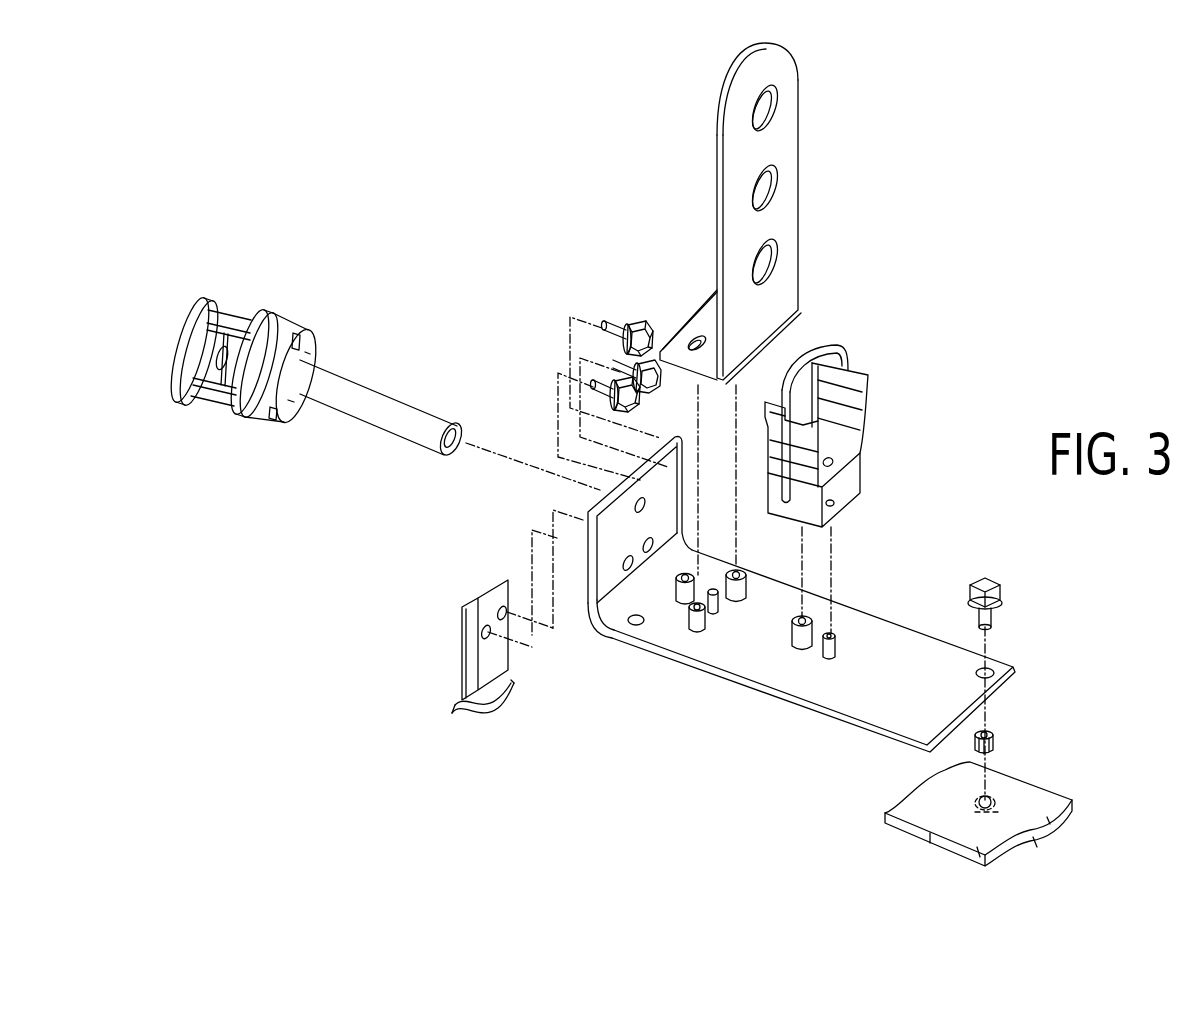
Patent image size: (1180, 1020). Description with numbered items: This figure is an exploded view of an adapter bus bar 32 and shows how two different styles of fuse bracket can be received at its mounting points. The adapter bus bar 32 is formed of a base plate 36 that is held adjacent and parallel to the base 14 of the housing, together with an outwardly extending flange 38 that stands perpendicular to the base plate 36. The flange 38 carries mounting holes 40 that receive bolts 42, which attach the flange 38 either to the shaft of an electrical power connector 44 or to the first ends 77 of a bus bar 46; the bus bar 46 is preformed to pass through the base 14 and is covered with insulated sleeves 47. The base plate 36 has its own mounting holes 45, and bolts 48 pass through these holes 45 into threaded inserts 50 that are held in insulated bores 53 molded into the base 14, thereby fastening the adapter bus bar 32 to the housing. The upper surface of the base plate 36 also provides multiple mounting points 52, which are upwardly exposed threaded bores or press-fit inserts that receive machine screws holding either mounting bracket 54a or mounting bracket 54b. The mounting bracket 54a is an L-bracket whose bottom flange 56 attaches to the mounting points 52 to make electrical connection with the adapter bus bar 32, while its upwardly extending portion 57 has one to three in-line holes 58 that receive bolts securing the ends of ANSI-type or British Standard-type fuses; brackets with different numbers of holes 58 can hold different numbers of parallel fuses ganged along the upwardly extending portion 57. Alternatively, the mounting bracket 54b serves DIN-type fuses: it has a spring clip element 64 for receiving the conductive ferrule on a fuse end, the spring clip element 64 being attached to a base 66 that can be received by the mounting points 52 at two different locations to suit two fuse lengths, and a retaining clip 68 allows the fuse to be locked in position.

The base 14 is at (1023, 795).
The adapter bus bar 32 is at (810, 596).
The base plate 36 is at (855, 651).
The flange 38 is at (600, 554).
The mounting holes 40 is at (627, 563).
The bolts 42 is at (645, 383).
The electrical power connector 44 is at (390, 410).
The mounting holes 45 is at (635, 626).
The bus bar 46 is at (473, 657).
The insulated sleeves 47 is at (513, 683).
The bolts 48 is at (990, 582).
The threaded inserts 50 is at (995, 741).
The mounting points 52 is at (830, 660).
The insulated bores 53 is at (1003, 813).
The mounting bracket 54a is at (789, 213).
The mounting bracket 54b is at (881, 399).
The bottom flange 56 is at (690, 322).
The upwardly extending portion 57 is at (735, 87).
The in-line holes 58 is at (773, 258).
The spring clip element 64 is at (863, 428).
The base 66 is at (862, 474).
The retaining clip 68 is at (833, 343).
The first ends 77 is at (479, 634).